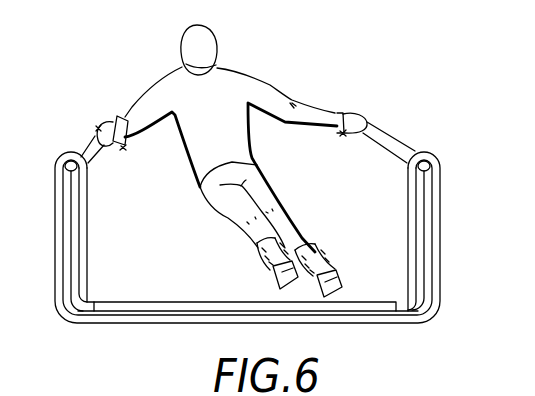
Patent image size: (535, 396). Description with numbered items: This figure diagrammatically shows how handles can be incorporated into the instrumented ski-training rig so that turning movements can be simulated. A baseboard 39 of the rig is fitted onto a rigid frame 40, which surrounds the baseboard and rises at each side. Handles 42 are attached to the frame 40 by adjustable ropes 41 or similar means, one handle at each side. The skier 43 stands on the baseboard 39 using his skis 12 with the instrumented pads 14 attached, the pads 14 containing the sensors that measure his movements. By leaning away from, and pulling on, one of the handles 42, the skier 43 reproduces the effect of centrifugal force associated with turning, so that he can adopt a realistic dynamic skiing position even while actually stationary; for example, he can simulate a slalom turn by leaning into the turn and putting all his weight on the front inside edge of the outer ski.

The skis 12 is at (268, 270).
The instrumented pads 14 is at (345, 290).
The baseboard 39 is at (178, 307).
The rigid frame 40 is at (62, 252).
The adjustable ropes 41 is at (88, 145).
The handles 42 is at (97, 128).
The skier 43 is at (250, 86).